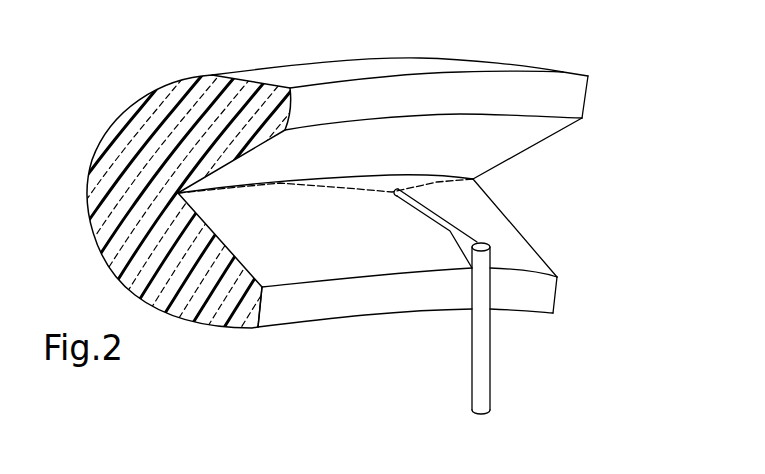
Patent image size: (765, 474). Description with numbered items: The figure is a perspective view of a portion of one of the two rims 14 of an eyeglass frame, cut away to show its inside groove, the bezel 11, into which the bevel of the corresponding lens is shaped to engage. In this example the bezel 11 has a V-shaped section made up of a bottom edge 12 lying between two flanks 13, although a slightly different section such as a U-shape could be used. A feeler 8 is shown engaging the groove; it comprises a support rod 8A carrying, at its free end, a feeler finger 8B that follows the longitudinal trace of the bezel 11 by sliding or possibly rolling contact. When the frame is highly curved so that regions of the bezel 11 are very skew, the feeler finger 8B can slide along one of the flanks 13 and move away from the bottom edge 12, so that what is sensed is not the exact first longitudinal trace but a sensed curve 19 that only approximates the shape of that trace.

The rim 14 is at (571, 66).
The flank 13 is at (535, 136).
The bottom edge 12 is at (350, 182).
The sensed curve 19 is at (313, 186).
The bezel 11 is at (284, 271).
The feeler 8 is at (468, 301).
The support rod 8A is at (484, 299).
The feeler finger 8B is at (440, 219).